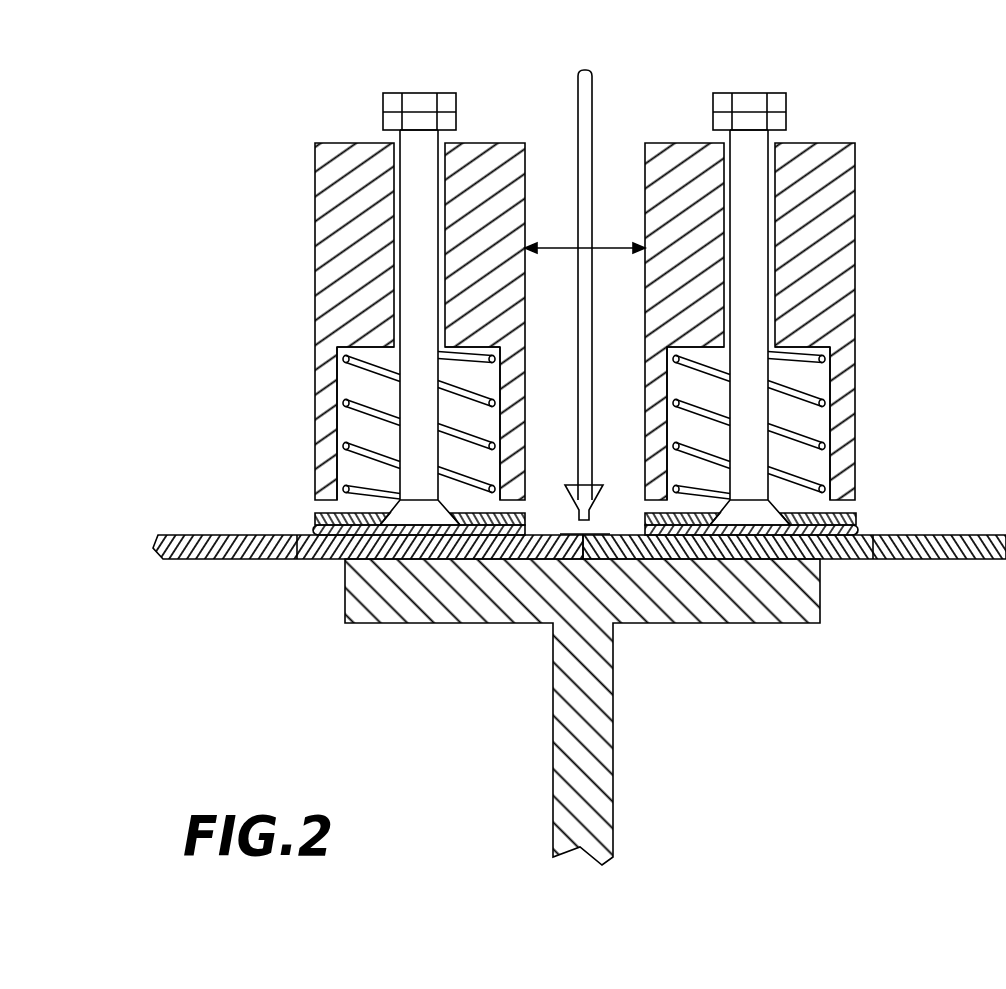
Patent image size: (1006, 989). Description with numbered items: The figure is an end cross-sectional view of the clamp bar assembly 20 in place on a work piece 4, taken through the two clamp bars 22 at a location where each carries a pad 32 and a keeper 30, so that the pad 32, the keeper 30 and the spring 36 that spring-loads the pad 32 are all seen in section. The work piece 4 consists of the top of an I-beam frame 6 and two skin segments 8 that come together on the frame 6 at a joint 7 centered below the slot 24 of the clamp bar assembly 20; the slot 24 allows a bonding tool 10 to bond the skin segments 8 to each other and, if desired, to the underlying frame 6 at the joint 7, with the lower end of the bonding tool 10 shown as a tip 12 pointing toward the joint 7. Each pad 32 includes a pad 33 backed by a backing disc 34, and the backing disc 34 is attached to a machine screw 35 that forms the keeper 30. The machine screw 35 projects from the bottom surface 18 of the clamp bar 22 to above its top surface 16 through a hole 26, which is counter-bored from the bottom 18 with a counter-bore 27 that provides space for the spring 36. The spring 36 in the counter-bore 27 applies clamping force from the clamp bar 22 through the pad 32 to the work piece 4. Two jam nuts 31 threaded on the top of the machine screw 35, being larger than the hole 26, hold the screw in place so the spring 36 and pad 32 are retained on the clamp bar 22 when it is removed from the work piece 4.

The work piece 4 is at (730, 764).
The I-beam frame 6 is at (712, 623).
The joint 7 is at (572, 531).
The skin segments 8 is at (212, 560).
The bonding tool 10 is at (588, 108).
The pin tip 12 is at (601, 526).
The top surface 16 is at (290, 147).
The bottom surface 18 is at (302, 503).
The clamp bar assembly 20 is at (276, 58).
The clamp bar 22 is at (315, 208).
The slot 24 is at (588, 248).
The hole 26 is at (393, 280).
The counter-bore 27 is at (337, 440).
The keeper 30 is at (374, 64).
The jam nuts 31 is at (385, 101).
The pad 32 is at (292, 534).
The pad 33 is at (297, 560).
The backing disc 34 is at (315, 519).
The machine screw 35 is at (426, 137).
The spring 36 is at (345, 406).